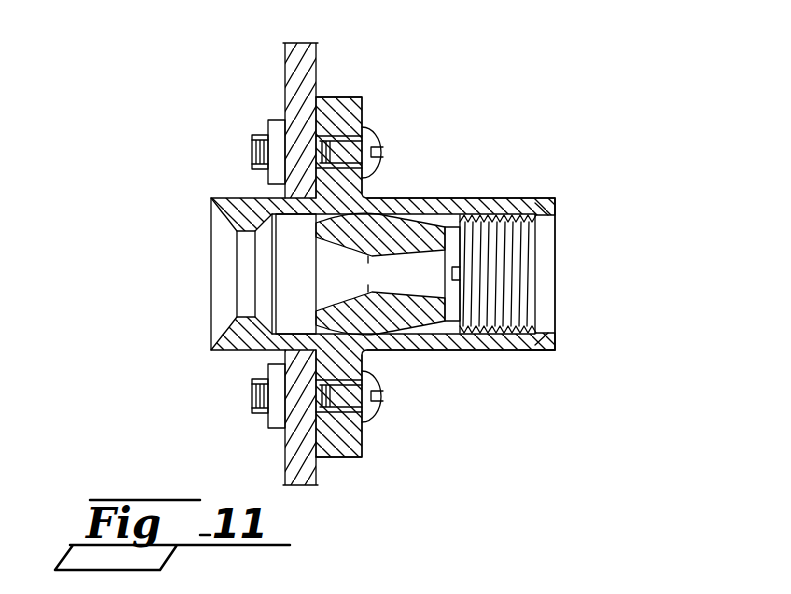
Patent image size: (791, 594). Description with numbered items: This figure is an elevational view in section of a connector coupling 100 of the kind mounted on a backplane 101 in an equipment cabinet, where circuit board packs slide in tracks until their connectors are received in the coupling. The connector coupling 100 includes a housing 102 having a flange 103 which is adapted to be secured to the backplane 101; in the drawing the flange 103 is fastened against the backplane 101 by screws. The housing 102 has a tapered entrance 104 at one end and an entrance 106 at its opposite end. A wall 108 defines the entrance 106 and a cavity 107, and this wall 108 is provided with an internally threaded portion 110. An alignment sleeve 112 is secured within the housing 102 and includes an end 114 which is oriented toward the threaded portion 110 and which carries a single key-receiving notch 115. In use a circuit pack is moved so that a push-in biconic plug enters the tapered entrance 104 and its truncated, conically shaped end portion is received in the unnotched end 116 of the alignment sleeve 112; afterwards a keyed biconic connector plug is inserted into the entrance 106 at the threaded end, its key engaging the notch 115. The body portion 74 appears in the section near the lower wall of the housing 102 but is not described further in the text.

The connector coupling 100 is at (510, 390).
The backplane 101 is at (290, 455).
The housing 102 is at (227, 196).
The flange 103 is at (356, 107).
The tapered entrance 104 is at (223, 285).
The entrance 106 is at (547, 258).
The cavity 107 is at (515, 297).
The wall 108 is at (525, 345).
The threaded portion 110 is at (520, 228).
The alignment sleeve 112 is at (390, 230).
The end 114 is at (461, 236).
The notch 115 is at (462, 272).
The unnotched end 116 is at (275, 328).
The body lower wall 74 is at (423, 348).